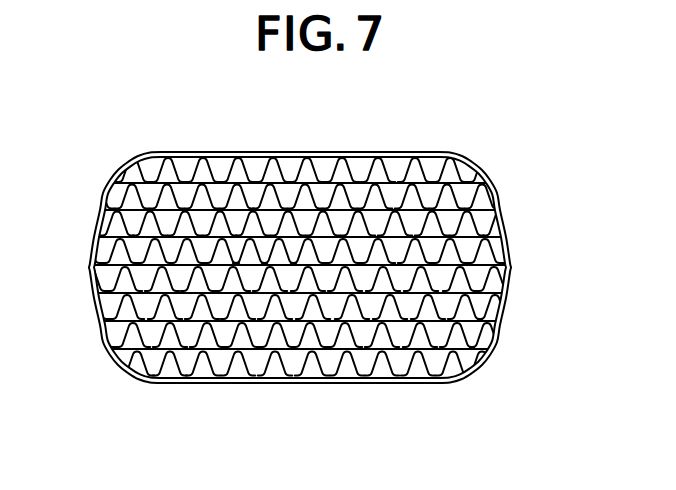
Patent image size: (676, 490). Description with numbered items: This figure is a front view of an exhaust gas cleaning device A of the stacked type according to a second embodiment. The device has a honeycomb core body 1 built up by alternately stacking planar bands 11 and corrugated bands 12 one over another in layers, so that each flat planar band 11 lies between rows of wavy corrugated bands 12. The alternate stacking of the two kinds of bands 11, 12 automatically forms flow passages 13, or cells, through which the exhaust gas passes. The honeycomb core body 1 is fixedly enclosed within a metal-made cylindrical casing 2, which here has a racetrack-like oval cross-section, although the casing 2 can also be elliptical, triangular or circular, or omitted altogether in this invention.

The catalyst carrier assembly A is at (300, 139).
The honeycomb core body 1 is at (147, 330).
The metal casing 2 is at (127, 165).
The planar band 11 is at (185, 365).
The corrugated band 12 is at (242, 360).
The flow passage 13 is at (314, 366).